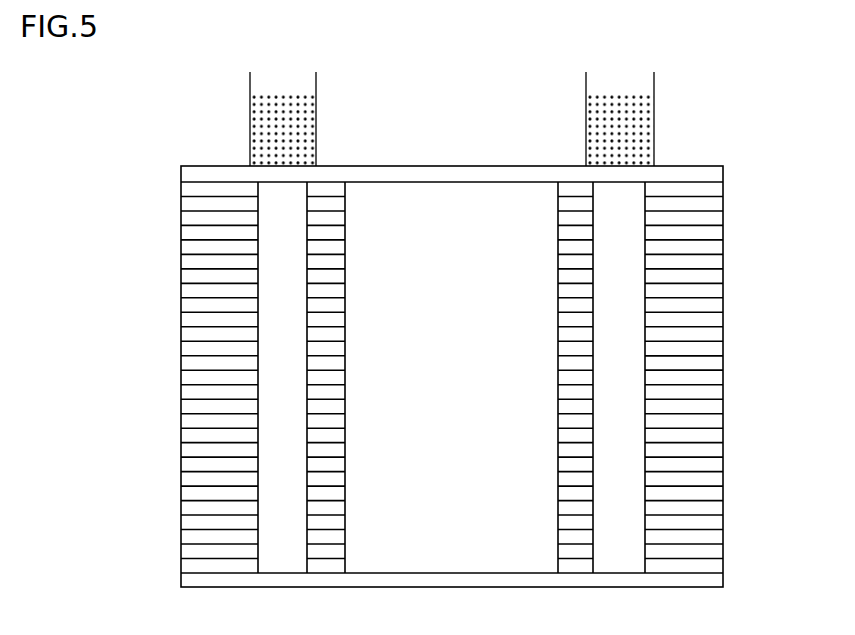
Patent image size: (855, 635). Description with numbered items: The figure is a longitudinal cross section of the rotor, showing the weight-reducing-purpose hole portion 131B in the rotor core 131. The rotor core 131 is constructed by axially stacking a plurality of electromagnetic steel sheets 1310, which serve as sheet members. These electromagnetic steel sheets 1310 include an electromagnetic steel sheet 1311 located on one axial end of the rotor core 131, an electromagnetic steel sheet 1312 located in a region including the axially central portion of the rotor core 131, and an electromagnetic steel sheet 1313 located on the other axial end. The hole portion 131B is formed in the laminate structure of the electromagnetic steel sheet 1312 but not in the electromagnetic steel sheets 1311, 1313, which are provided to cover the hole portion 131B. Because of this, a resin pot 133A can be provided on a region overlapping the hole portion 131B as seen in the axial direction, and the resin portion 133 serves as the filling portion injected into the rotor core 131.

The rotor core 131 is at (134, 115).
The electromagnetic steel sheet 1310 is at (97, 155).
The electromagnetic steel sheet 1311 is at (195, 174).
The electromagnetic steel sheet 1312 is at (165, 182).
The electromagnetic steel sheet 1313 is at (197, 582).
The weight-reducing-purpose hole portion 131B is at (645, 376).
The resin portion 133 is at (275, 132).
The resin pot 133A is at (249, 81).